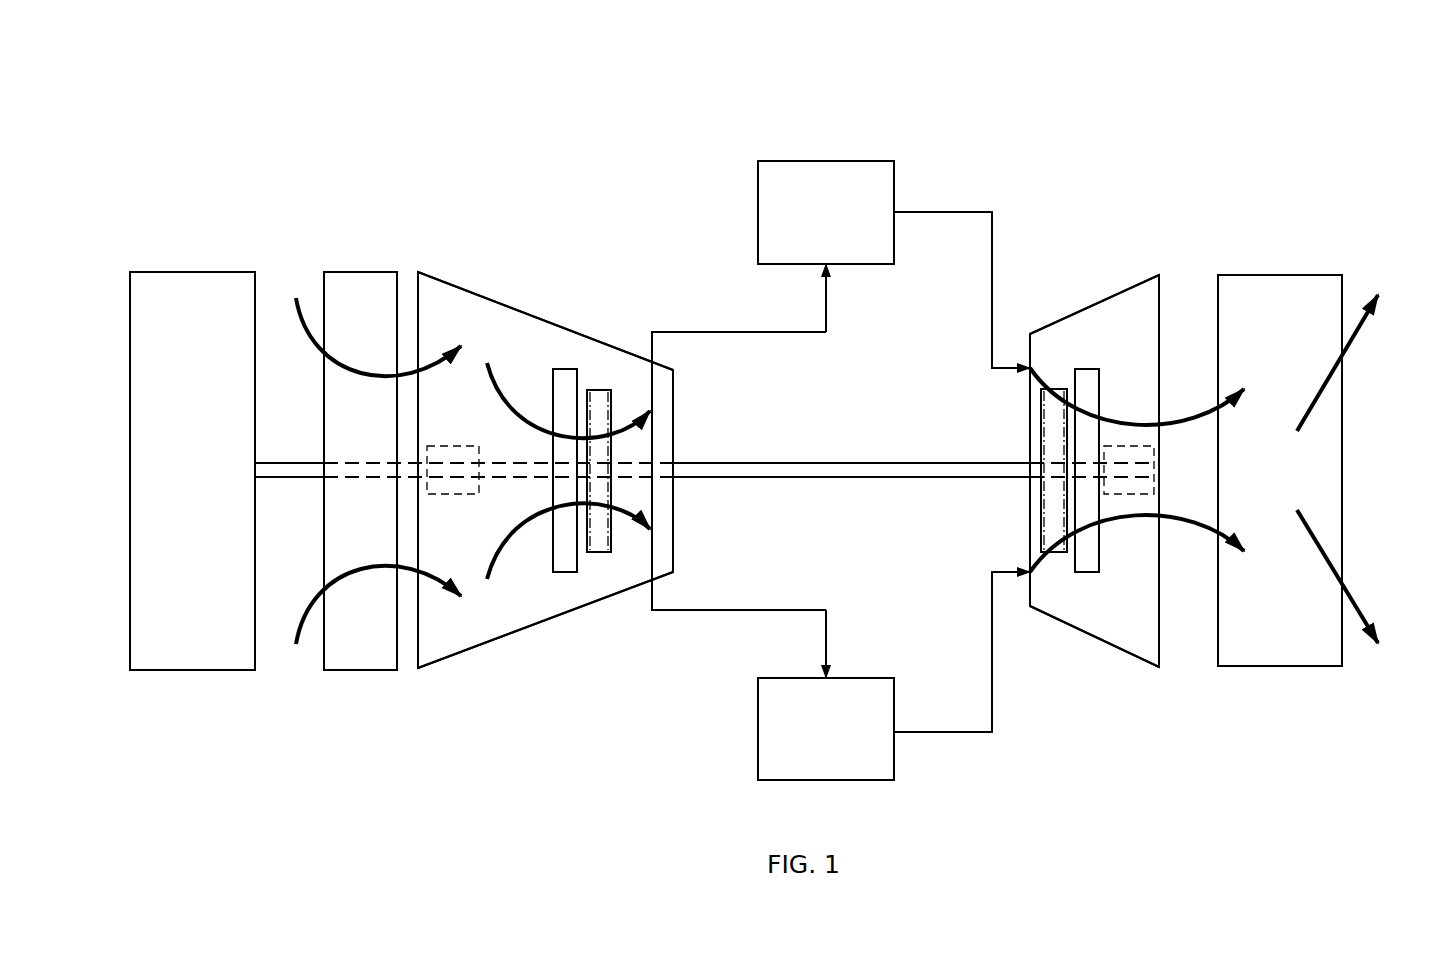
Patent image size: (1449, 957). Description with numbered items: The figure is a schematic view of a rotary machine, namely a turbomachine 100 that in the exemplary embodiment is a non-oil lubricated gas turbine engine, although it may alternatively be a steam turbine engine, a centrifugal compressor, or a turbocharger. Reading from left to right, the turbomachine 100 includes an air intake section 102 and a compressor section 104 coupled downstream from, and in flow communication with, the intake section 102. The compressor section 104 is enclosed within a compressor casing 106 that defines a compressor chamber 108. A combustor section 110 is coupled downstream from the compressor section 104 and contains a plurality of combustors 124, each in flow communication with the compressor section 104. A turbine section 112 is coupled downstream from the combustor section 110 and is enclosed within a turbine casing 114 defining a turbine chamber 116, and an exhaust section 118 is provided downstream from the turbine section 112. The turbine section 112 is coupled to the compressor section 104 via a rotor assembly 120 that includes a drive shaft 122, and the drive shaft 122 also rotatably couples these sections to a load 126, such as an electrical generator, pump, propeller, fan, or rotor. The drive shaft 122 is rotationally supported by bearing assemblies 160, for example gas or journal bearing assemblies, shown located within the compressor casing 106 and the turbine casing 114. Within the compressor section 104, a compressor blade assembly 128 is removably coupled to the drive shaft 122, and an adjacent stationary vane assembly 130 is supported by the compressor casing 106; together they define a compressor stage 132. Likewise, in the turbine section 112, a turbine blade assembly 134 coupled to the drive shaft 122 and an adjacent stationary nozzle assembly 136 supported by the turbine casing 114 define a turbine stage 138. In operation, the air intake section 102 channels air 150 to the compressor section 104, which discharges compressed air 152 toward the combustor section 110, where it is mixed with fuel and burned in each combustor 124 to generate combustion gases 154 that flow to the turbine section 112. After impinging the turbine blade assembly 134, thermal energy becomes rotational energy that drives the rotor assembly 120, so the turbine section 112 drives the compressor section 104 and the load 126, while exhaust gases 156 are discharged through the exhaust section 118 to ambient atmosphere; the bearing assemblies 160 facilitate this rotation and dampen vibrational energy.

The turbomachine 100 is at (300, 88).
The air intake section 102 is at (357, 263).
The compressor section 104 is at (468, 280).
The compressor casing 106 is at (534, 315).
The compressor chamber 108 is at (634, 383).
The combustor section 110 is at (953, 152).
The turbine section 112 is at (1155, 262).
The turbine casing 114 is at (1097, 302).
The turbine chamber 116 is at (1133, 350).
The exhaust section 118 is at (1275, 275).
The rotor assembly 120 is at (850, 455).
The drive shaft 122 is at (915, 479).
The combustor 124 is at (847, 226).
The load 126 is at (193, 272).
The compressor blade assembly 128 is at (597, 552).
The stationary vane assembly 130 is at (565, 572).
The compressor stage 132 is at (587, 667).
The turbine blade assembly 134 is at (1061, 552).
The stationary nozzle assembly 136 is at (1087, 572).
The turbine stage 138 is at (1078, 680).
The air 150 is at (306, 338).
The compressed air 152 is at (506, 397).
The combustion gases 154 is at (1184, 409).
The exhaust gases 156 is at (1350, 345).
The bearing assembly 160 is at (452, 495).